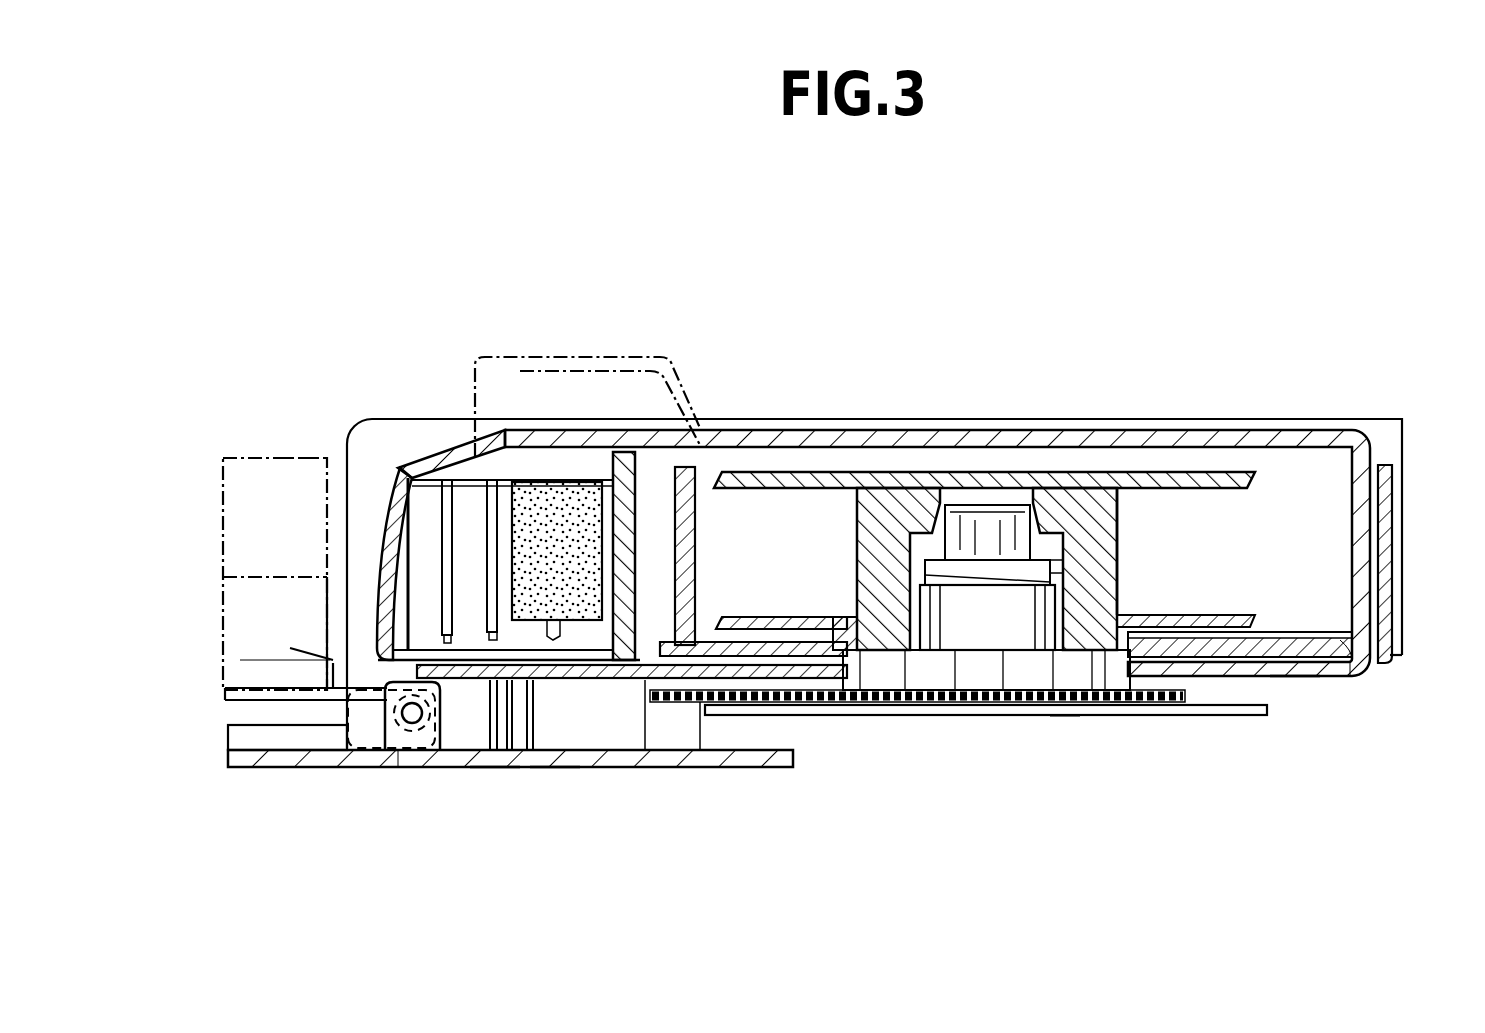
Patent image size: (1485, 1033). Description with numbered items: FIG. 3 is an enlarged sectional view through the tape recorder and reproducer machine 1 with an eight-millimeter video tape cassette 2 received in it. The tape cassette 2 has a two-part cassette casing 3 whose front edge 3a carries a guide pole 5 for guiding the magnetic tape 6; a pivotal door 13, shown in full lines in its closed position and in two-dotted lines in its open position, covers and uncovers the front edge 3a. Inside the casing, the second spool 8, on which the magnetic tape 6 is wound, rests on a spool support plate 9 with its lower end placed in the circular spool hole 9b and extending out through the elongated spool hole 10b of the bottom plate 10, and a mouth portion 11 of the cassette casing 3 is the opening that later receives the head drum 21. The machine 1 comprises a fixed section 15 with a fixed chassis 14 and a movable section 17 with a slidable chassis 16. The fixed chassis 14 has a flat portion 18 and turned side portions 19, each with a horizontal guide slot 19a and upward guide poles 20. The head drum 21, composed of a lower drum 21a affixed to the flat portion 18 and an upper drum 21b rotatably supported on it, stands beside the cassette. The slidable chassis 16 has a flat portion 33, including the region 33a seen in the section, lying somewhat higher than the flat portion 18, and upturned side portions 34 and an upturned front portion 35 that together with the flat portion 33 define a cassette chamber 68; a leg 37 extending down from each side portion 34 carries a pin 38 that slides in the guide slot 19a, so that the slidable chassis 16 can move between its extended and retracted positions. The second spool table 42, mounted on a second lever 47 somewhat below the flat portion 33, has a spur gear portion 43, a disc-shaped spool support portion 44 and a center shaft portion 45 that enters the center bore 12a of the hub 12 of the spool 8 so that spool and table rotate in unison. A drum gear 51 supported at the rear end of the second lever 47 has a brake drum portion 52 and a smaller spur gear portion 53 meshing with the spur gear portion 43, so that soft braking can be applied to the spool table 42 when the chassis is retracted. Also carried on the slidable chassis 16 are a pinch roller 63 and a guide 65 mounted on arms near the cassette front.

The tape recorder and reproducer machine 1 is at (856, 345).
The tape cassette 2 is at (1207, 432).
The cassette casing 3 is at (1143, 437).
The front edge 3a is at (405, 633).
The guide pole 5 is at (408, 485).
The magnetic tape 6 is at (405, 532).
The second spool 8 is at (1008, 468).
The spool support plate 9 is at (712, 641).
The circular spool hole 9b is at (847, 640).
The bottom plate 10 is at (1284, 650).
The elongated spool hole 10b is at (1100, 662).
The mouth portion 11 is at (610, 628).
The hub 12 is at (1118, 518).
The center bore 12a is at (1056, 572).
The pivotal door 13 is at (592, 352).
The fixed chassis 14 is at (617, 768).
The fixed section 15 is at (493, 770).
The slidable chassis 16 is at (1292, 680).
The movable section 17 is at (1064, 726).
The flat portion 18 is at (552, 768).
The turned side portion 19 is at (243, 754).
The guide slot 19a is at (293, 732).
The guide pole 20 is at (497, 740).
The head drum 21 is at (229, 456).
The lower drum 21a is at (262, 657).
The upper drum 21b is at (292, 456).
The flat portion 33 is at (1335, 680).
The end of bottom plate 33a is at (1120, 708).
The upturned side portion 34 is at (410, 426).
The upturned front portion 35 is at (1384, 540).
The leg 37 is at (365, 750).
The pin 38 is at (413, 722).
The second spool table 42 is at (957, 486).
The spur gear portion 43 is at (1010, 700).
The spool support portion 44 is at (945, 665).
The center shaft portion 45 is at (913, 557).
The second lever 47 is at (948, 715).
The drum gear 51 is at (640, 678).
The brake drum portion 52 is at (648, 680).
The spur gear portion 53 is at (698, 690).
The pinch roller 63 is at (566, 482).
The guide 65 is at (495, 480).
The cassette chamber 68 is at (1330, 650).